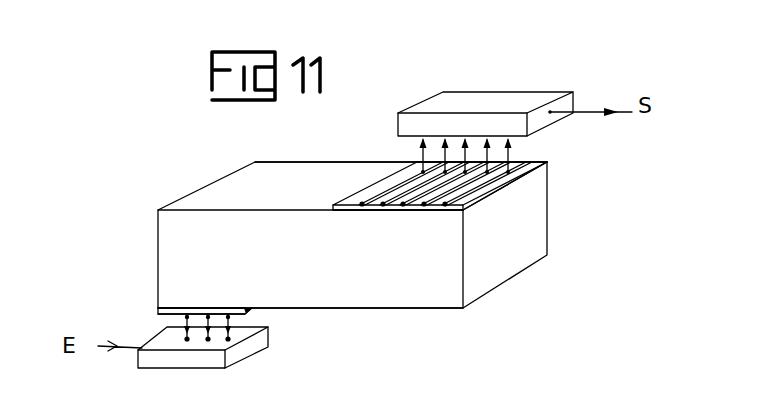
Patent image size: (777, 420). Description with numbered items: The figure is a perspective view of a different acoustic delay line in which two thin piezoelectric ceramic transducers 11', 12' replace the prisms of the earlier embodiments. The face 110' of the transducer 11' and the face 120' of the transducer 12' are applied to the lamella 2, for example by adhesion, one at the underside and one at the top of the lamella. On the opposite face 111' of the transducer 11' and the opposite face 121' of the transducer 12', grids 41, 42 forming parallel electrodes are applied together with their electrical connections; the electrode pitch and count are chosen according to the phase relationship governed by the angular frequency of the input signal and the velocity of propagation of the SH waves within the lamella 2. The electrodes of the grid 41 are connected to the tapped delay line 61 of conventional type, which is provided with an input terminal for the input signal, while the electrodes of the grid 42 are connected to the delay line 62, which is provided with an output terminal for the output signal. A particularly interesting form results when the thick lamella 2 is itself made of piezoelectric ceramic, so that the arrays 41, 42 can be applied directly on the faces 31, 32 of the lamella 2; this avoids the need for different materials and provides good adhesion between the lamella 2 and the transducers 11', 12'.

The lamella 2 is at (158, 248).
The face of the lamella 32 is at (315, 177).
The face of the lamella 31 is at (407, 310).
The thin piezoelectric ceramic transducer 12' is at (471, 200).
The face of the transducer 121' is at (500, 147).
The face of the transducer 120' is at (468, 190).
The grid 42 is at (421, 209).
The delay line 62 is at (497, 100).
The thin piezoelectric ceramic transducer 11' is at (238, 323).
The face of the transducer 110' is at (174, 305).
The face of the transducer 111' is at (177, 327).
The grid 41 is at (228, 313).
The tapped delay line 61 is at (192, 360).